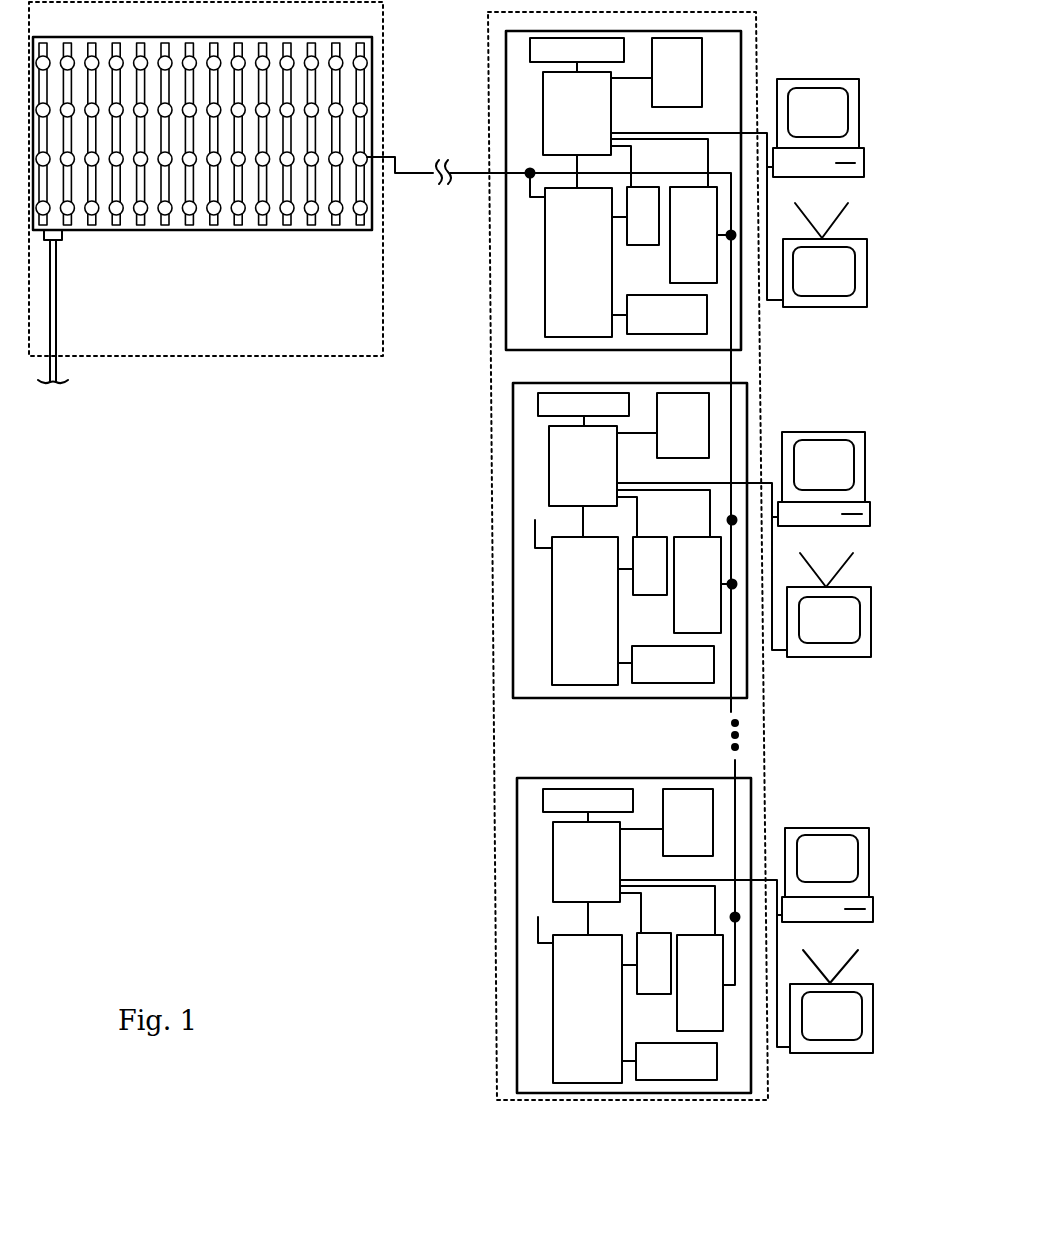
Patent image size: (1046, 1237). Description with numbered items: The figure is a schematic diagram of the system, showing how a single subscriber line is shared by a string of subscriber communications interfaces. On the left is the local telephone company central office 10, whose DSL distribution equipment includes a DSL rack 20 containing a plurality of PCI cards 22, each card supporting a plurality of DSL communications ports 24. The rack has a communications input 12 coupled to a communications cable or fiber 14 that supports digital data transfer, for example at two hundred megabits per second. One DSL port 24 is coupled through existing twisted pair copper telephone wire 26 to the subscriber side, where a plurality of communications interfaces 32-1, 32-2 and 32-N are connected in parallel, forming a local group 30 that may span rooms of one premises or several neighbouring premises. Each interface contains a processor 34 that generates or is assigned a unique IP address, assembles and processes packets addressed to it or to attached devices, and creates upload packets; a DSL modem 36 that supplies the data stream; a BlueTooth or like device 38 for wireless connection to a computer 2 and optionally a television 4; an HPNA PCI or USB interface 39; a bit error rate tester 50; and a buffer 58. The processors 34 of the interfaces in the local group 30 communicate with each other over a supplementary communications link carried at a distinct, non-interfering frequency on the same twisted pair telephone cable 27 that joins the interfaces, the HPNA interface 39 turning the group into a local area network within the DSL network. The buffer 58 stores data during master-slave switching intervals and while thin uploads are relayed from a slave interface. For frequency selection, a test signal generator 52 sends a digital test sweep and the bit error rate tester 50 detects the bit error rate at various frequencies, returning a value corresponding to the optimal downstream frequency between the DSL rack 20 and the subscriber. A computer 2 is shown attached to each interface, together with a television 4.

The computer 2 is at (833, 78).
The television 4 is at (826, 308).
The local telephone company central office 10 is at (231, 366).
The communications input 12 is at (58, 370).
The communications cable or fiber 14 is at (63, 237).
The DSL rack 20 is at (136, 32).
The PCI card 22 is at (143, 232).
The DSL communications port 24 is at (367, 107).
The twisted pair copper telephone wire 26 is at (472, 174).
The twisted pair telephone cable 27 is at (738, 358).
The local group 30 is at (486, 43).
The first communications interface 32-1 is at (504, 302).
The second communications interface 32-2 is at (511, 630).
The Nth communications interface 32-N is at (515, 793).
The processor 34 is at (588, 124).
The DSL modem 36 is at (589, 267).
The BlueTooth or like device 38 is at (688, 79).
The HPNA PCI or USB interface 39 is at (704, 244).
The bit error rate tester 50 is at (654, 224).
The test signal generator 52 is at (678, 322).
The buffer 58 is at (588, 60).